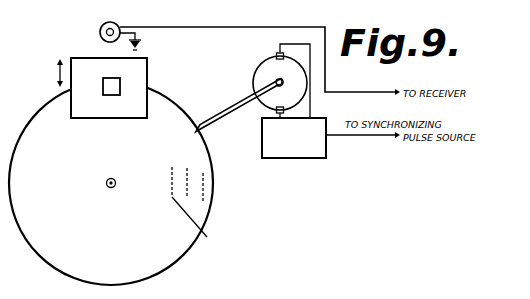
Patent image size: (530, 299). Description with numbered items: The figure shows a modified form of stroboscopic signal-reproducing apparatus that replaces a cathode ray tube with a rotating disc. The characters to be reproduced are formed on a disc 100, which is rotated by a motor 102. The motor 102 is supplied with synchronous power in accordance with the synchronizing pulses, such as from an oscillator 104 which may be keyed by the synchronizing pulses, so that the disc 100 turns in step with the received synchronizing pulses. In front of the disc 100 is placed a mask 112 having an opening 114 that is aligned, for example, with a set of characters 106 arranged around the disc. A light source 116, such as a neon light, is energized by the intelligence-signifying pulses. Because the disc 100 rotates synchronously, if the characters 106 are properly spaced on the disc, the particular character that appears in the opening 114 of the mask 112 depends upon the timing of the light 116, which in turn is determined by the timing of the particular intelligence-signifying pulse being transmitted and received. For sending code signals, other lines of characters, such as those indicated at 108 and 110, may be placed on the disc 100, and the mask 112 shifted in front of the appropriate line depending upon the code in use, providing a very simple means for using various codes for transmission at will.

The disc 100 is at (178, 259).
The motor 102 is at (259, 72).
The oscillator 104 is at (262, 139).
The set of characters 106 is at (203, 192).
The line of characters 108 is at (187, 196).
The line of characters 110 is at (204, 205).
The mask 112 is at (147, 64).
The opening 114 is at (103, 78).
The light source 116 is at (100, 29).